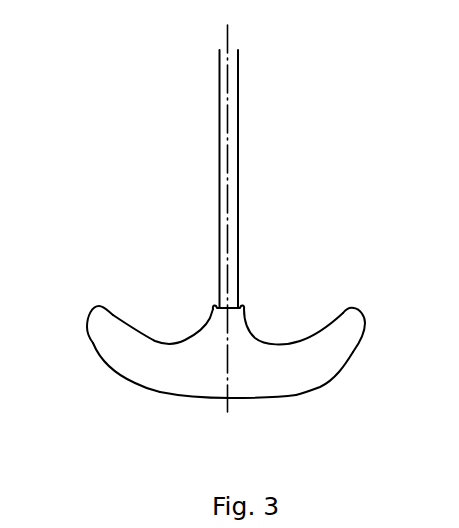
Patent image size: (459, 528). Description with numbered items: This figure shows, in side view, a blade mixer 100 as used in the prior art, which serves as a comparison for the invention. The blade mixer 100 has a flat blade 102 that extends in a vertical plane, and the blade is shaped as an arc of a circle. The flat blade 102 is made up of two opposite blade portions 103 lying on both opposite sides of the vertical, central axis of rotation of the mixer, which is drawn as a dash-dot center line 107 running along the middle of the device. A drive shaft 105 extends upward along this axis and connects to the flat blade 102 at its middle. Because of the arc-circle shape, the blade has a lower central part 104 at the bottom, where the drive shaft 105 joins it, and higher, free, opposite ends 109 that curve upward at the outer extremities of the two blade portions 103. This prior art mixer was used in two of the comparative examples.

The blade mixer 100 is at (290, 88).
The flat blade 102 is at (306, 288).
The opposite blade portions 103 is at (113, 349).
The lower central part 104 is at (152, 403).
The drive shaft 105 is at (233, 158).
The longitudinal axis 107 is at (228, 32).
The free opposite ends 109 is at (97, 305).